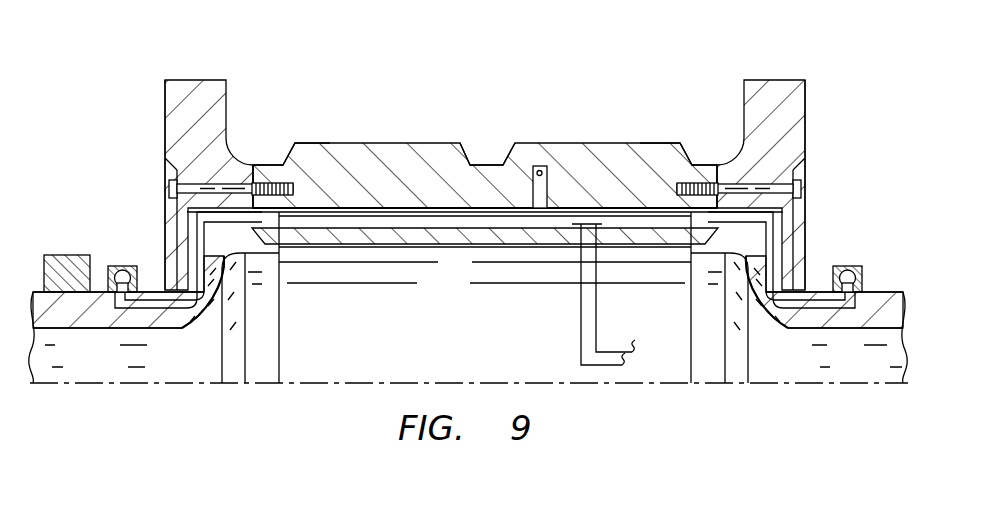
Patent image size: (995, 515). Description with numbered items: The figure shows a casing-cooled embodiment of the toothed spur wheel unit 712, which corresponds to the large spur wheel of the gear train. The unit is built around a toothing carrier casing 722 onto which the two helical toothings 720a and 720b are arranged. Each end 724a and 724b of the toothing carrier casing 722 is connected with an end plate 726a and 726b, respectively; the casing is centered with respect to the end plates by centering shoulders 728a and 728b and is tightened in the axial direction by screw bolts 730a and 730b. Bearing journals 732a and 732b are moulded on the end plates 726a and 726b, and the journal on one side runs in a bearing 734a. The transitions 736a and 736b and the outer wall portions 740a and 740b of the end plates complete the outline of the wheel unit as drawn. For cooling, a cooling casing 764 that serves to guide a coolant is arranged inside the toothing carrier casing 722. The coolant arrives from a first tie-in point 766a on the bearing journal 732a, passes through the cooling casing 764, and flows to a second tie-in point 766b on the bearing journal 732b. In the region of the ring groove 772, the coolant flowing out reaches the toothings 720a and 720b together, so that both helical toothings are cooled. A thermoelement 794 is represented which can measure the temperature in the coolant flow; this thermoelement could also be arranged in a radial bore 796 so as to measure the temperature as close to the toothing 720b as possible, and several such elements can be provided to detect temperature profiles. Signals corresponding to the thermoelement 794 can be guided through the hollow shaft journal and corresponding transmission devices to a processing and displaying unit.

The spur wheel unit 712 is at (351, 61).
The helical toothing 720a is at (342, 143).
The helical toothing 720b is at (618, 143).
The toothing carrier casing 722 is at (416, 160).
The end of toothing carrier casing 724a is at (265, 178).
The end of toothing carrier casing 724b is at (705, 176).
The end plate 726a is at (168, 112).
The end plate 726b is at (805, 121).
The centering shoulder 728a is at (248, 279).
The centering shoulder 728b is at (722, 279).
The screw bolt 730a is at (200, 186).
The screw bolt 730b is at (802, 187).
The bearing journal 732a is at (95, 318).
The bearing journal 732b is at (870, 318).
The bearing 734a is at (57, 255).
The fillet 736a is at (183, 327).
The fillet 736b is at (786, 327).
The bracket 740a is at (207, 88).
The bracket 740b is at (762, 88).
The cooling casing 764 is at (450, 237).
The first tie-in point 766a is at (123, 266).
The second tie-in point 766b is at (858, 266).
The ring groove 772 is at (480, 160).
The thermoelement 794 is at (590, 222).
The radial bore 796 is at (540, 165).